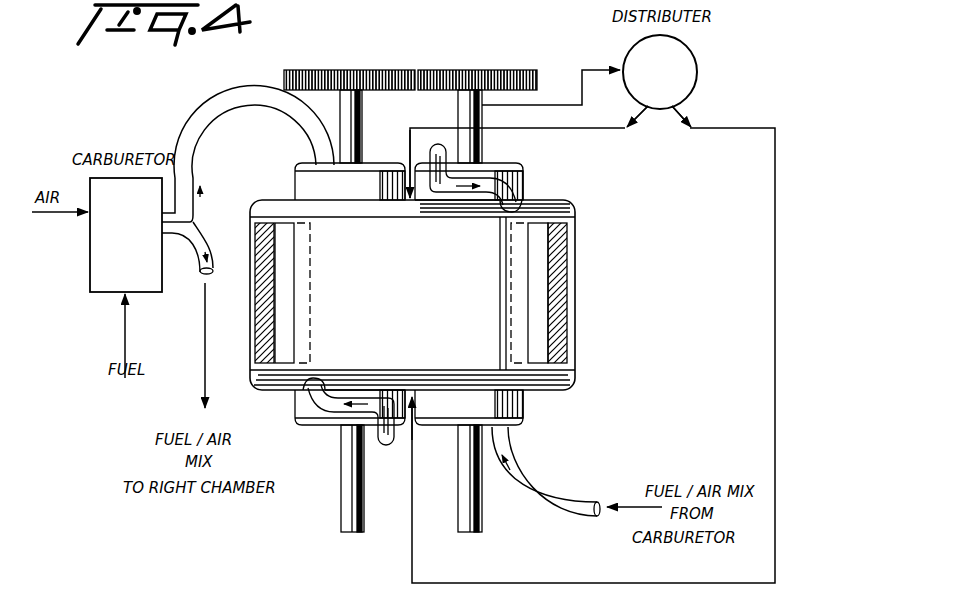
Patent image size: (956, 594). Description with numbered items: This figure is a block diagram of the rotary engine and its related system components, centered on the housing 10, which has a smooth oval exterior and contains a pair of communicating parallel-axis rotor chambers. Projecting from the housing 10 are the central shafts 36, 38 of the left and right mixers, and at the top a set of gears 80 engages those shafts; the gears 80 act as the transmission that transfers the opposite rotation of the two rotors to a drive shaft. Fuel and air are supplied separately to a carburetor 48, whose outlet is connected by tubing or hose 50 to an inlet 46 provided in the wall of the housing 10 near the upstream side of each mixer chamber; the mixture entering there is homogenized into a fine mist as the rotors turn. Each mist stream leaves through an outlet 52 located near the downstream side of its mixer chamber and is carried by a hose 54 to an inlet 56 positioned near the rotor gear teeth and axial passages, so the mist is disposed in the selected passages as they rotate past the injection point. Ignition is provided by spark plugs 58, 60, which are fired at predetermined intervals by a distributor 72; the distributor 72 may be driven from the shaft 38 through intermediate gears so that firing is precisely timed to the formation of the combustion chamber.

The housing 10 is at (590, 258).
The central shaft 36 is at (345, 113).
The central shaft 38 is at (468, 97).
The inlet 46 is at (300, 186).
The carburetor 48 is at (96, 260).
The tubing or hose 50 is at (215, 126).
The outlet 52 is at (435, 155).
The hose 54 is at (472, 181).
The inlet 56 is at (518, 200).
The spark plug 58 is at (412, 206).
The spark plug 60 is at (410, 392).
The distributor 72 is at (696, 60).
The set of gears 80 is at (418, 70).